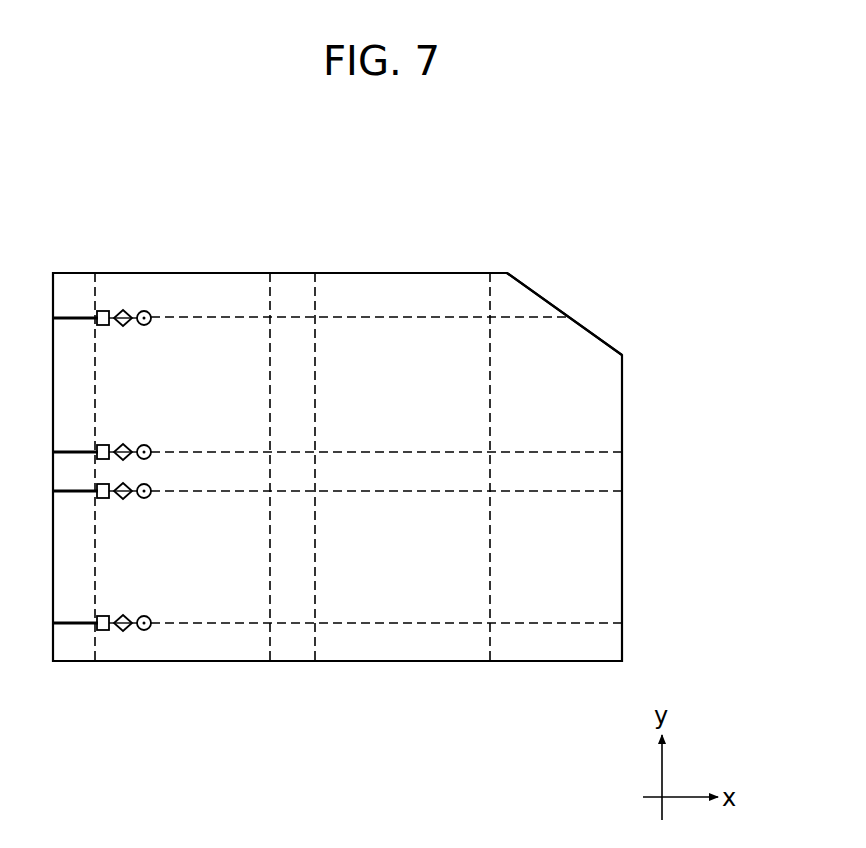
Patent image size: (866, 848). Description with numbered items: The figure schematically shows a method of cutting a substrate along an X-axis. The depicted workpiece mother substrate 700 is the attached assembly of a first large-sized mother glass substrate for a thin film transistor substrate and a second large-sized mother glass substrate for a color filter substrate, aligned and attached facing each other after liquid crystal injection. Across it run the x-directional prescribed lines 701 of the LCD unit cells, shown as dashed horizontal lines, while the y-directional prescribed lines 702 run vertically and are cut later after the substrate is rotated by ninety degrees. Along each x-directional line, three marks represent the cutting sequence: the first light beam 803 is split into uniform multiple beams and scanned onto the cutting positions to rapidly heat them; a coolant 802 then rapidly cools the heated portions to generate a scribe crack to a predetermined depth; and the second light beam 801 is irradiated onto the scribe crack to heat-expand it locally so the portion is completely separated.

The workpiece mother substrate 700 is at (630, 184).
The x-directional prescribed lines 701 is at (430, 315).
The y-directional prescribed lines 702 is at (492, 288).
The second light beam 801 is at (98, 311).
The coolant 802 is at (123, 327).
The first light beam 803 is at (144, 311).